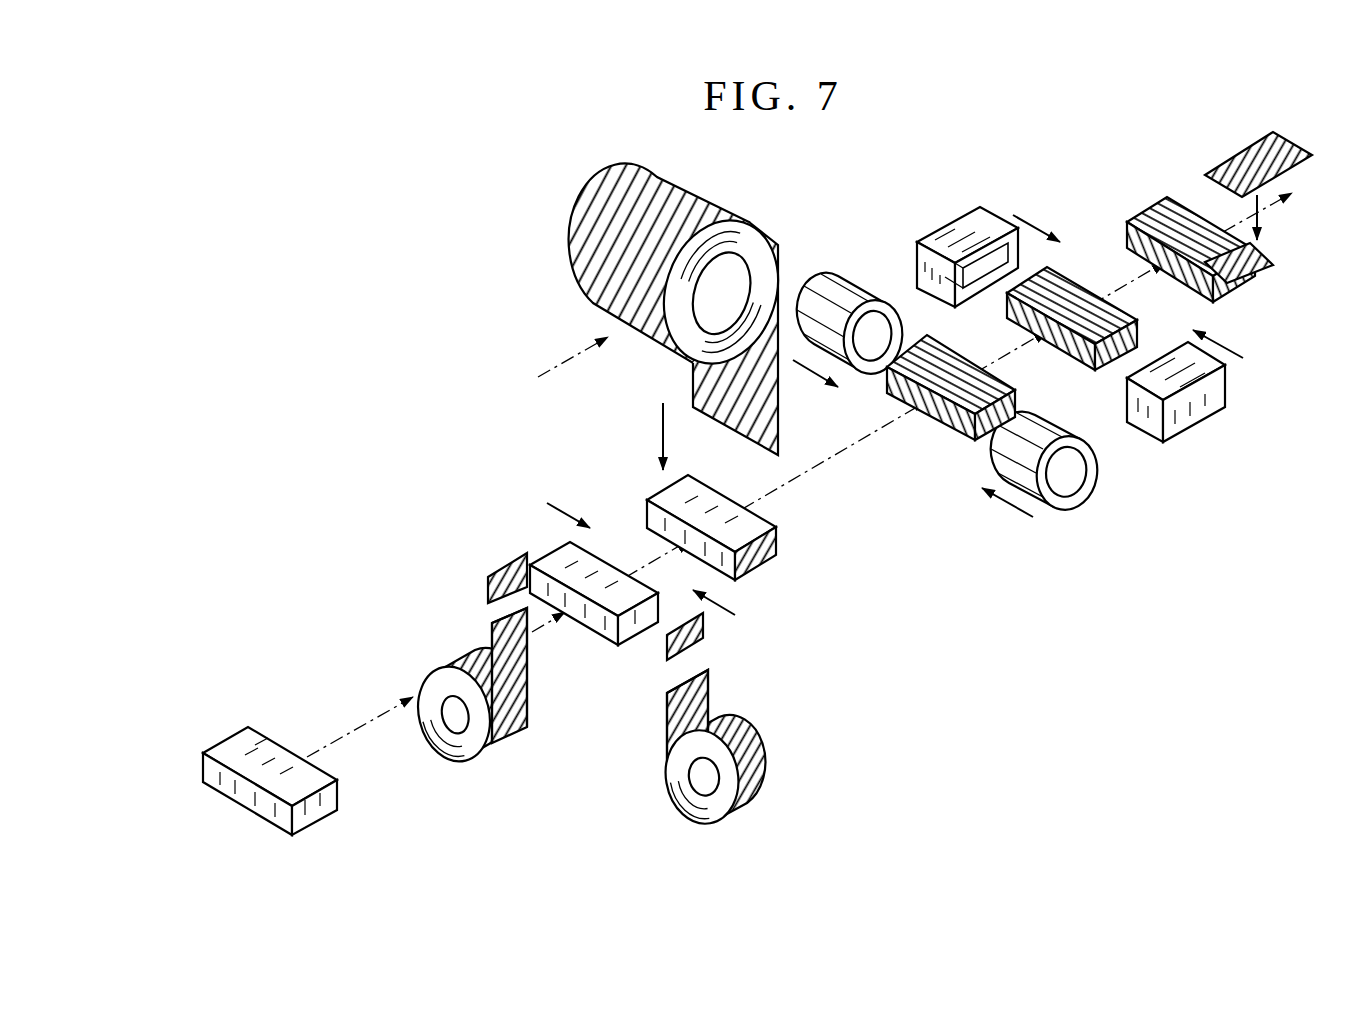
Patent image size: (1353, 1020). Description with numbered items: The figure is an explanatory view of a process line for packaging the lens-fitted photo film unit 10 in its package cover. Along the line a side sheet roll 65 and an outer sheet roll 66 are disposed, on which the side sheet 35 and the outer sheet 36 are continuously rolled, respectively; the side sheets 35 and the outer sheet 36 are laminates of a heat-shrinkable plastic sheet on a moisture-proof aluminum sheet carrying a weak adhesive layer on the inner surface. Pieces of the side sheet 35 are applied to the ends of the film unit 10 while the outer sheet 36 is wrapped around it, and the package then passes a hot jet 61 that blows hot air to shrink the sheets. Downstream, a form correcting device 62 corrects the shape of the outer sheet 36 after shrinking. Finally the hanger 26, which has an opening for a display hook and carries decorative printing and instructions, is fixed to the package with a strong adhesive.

The film unit 10 is at (667, 500).
The hanger 26 is at (1261, 276).
The side sheet 35 is at (488, 585).
The outer sheet 36 is at (943, 416).
The hot jet 61 is at (838, 282).
The form correcting device 62 is at (960, 232).
The side sheet roll 65 is at (515, 728).
The outer sheet roll 66 is at (617, 212).